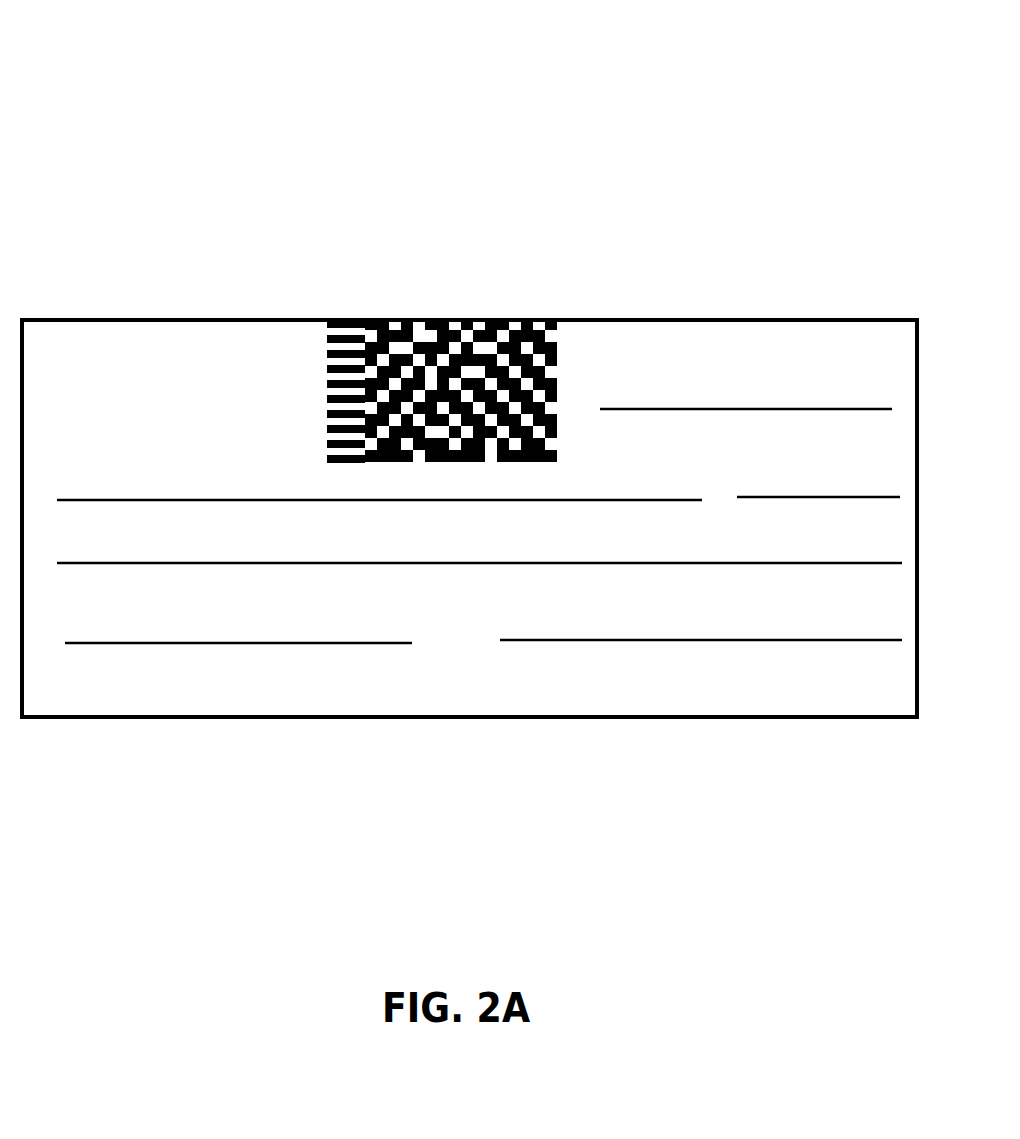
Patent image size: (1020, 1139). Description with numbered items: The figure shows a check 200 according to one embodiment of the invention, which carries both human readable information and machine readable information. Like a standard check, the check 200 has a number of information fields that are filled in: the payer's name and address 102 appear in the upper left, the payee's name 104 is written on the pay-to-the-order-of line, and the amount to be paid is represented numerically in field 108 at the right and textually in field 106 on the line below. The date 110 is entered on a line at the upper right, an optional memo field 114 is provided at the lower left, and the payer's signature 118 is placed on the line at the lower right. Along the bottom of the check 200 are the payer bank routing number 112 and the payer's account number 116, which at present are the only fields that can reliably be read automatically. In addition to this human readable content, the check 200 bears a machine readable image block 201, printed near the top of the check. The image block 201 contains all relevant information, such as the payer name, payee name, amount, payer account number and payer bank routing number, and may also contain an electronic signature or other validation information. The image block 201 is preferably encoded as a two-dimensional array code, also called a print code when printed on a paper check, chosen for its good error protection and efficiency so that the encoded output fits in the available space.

The check 200 is at (138, 101).
The payer's name and address 102 is at (208, 337).
The payee's name 104 is at (443, 410).
The machine readable image block 201 is at (473, 458).
The textual amount field 106 is at (602, 552).
The numerical amount field 108 is at (747, 462).
The date 110 is at (728, 383).
The payer bank routing number 112 is at (150, 698).
The memo field 114 is at (340, 652).
The payer's account number 116 is at (485, 697).
The payer's signature 118 is at (665, 648).